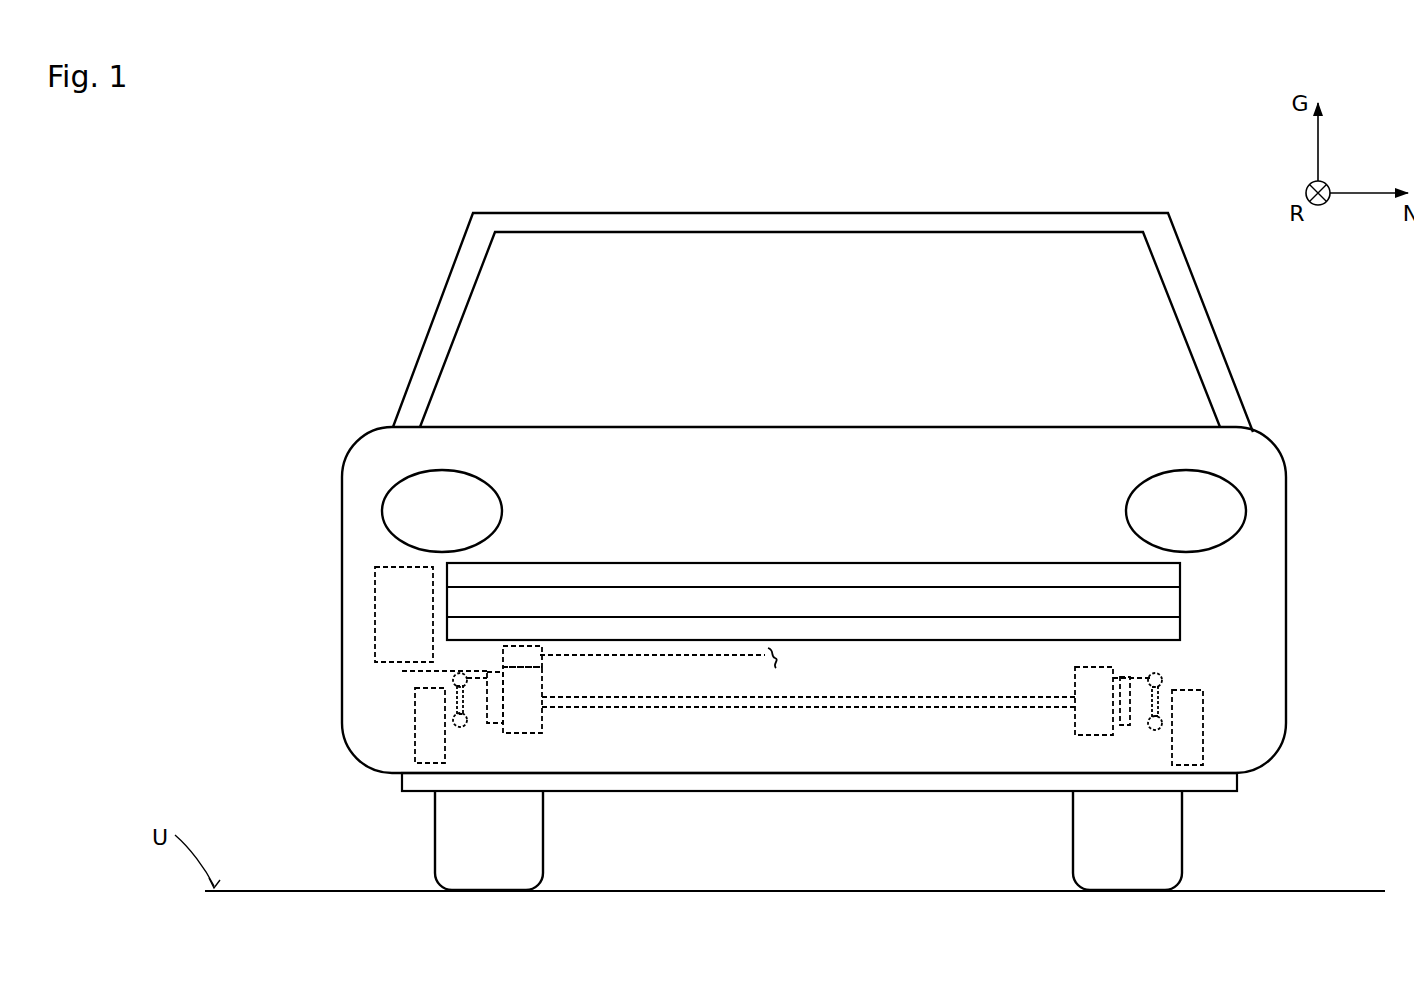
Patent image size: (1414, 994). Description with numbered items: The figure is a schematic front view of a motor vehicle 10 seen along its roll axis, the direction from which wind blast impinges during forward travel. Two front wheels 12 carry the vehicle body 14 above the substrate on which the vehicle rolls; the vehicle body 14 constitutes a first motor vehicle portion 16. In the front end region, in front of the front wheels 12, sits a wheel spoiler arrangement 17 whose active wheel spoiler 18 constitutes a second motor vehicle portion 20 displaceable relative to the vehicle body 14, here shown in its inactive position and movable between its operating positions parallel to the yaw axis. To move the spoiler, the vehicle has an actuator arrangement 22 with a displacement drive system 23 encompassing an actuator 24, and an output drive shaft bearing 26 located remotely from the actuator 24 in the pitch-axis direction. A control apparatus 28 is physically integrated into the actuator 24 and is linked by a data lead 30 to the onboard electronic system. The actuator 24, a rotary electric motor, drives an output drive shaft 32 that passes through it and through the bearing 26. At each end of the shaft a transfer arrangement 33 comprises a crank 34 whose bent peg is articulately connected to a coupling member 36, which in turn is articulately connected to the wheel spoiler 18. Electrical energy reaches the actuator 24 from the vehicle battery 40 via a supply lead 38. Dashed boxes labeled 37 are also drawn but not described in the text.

The motor vehicle 10 is at (258, 280).
The front wheels 12 is at (401, 862).
The vehicle body 14 is at (731, 493).
The first motor vehicle portion 16 is at (343, 560).
The wheel spoiler arrangement 17 is at (1169, 666).
The active wheel spoiler 18 is at (737, 774).
The second motor vehicle portion 20 is at (402, 783).
The actuator arrangement 22 is at (570, 678).
The displacement drive system 23 is at (554, 728).
The actuator 24 is at (522, 700).
The output drive shaft bearing 26 is at (1094, 701).
The control apparatus 28 is at (525, 660).
The data lead 30 is at (680, 655).
The output drive shaft 32 is at (700, 700).
The transfer arrangement 33 is at (431, 681).
The crank 34 is at (490, 725).
The coupling member 36 is at (458, 728).
The control unit 37 is at (809, 726).
The supply lead 38 is at (402, 668).
The vehicle battery 40 is at (404, 614).